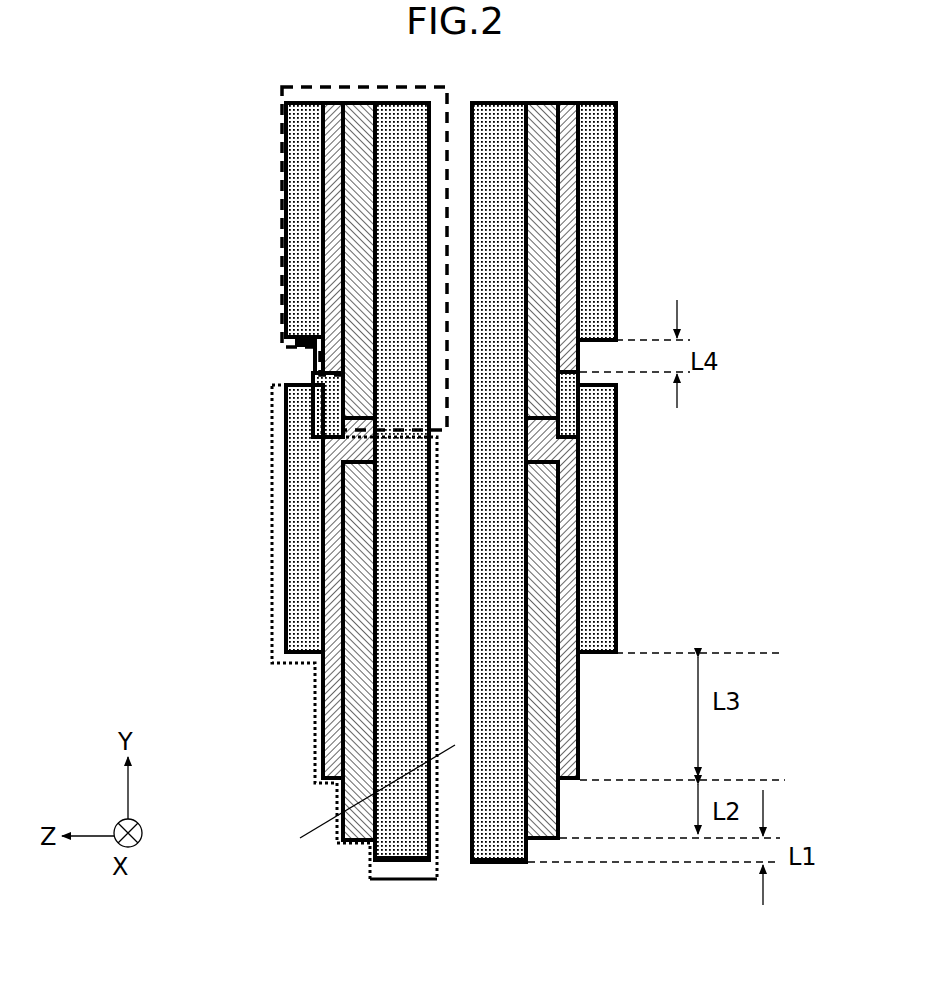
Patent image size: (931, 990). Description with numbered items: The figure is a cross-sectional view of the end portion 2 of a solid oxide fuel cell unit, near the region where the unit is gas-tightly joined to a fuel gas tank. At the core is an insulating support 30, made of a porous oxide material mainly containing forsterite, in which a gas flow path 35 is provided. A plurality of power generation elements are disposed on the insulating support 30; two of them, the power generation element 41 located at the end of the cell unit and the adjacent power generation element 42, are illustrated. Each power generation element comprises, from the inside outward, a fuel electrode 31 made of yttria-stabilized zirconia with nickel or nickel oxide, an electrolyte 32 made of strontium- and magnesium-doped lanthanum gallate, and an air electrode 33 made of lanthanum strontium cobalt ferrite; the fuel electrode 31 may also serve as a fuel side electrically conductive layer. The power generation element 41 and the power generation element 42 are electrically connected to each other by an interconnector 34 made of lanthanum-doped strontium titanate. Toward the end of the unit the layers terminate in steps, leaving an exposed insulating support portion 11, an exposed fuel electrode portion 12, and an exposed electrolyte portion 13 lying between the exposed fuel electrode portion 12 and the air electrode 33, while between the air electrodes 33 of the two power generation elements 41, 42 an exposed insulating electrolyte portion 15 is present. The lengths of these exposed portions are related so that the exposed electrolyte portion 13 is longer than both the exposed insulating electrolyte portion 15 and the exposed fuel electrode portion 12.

The end portion 2 is at (398, 886).
The exposed insulating support portion 11 is at (398, 843).
The exposed fuel electrode portion 12 is at (343, 800).
The exposed electrolyte portion 13 is at (337, 720).
The exposed insulating electrolyte portion 15 is at (313, 362).
The insulating support 30 is at (500, 830).
The fuel electrode 31 is at (355, 250).
The electrolyte 32 is at (335, 175).
The air electrode 33 is at (300, 292).
The interconnector 34 is at (313, 397).
The gas flow path 35 is at (361, 804).
The power generation element 41 is at (266, 530).
The power generation element 42 is at (270, 237).